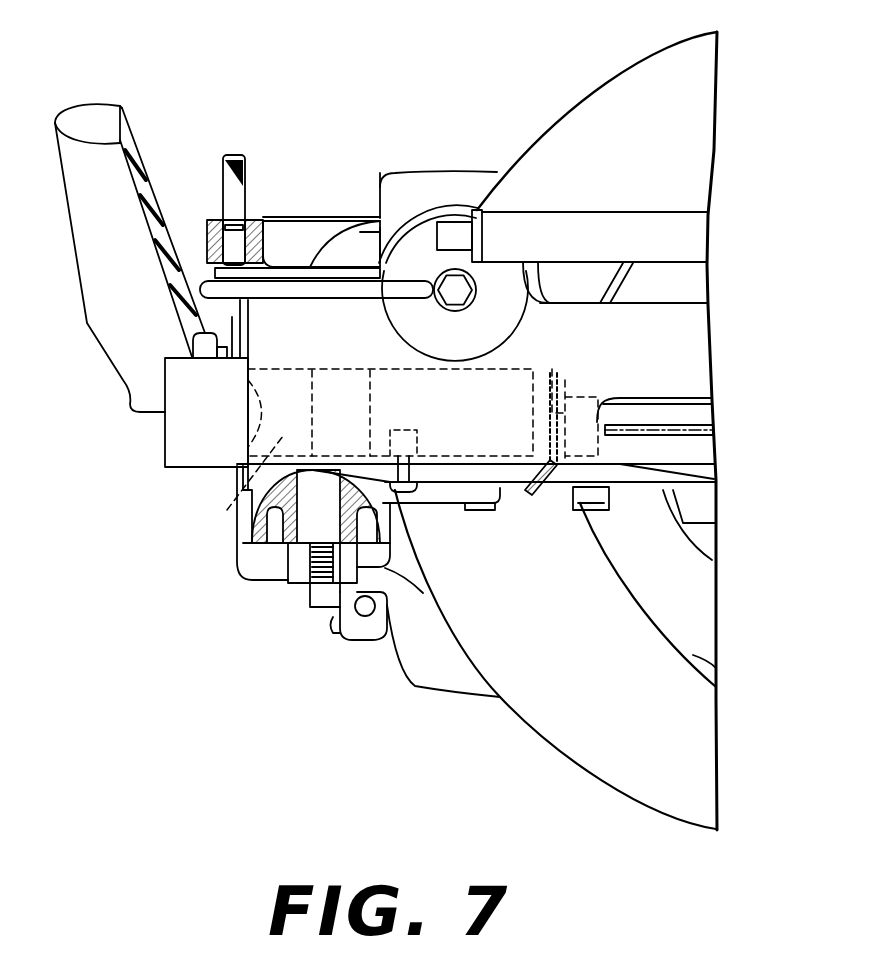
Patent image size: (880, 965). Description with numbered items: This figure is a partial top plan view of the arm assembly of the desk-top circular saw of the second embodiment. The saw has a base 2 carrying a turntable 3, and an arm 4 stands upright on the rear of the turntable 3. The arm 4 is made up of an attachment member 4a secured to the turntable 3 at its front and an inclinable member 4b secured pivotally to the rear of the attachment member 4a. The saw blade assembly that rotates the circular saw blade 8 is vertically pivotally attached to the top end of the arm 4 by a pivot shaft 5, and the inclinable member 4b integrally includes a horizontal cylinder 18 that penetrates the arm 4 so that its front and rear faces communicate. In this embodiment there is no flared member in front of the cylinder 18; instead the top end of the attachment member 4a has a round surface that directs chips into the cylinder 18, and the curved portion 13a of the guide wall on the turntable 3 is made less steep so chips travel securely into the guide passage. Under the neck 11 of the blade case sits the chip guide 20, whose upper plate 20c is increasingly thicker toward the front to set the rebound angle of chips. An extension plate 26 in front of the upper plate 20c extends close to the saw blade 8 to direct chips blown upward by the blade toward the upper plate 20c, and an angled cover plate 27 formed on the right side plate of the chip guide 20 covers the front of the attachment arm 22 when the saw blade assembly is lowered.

The base 2 is at (436, 467).
The turntable 3 is at (557, 145).
The arm 4 is at (270, 583).
The attachment member 4a is at (381, 632).
The inclinable member 4b is at (250, 565).
The pivot shaft 5 is at (313, 525).
The circular saw blade 8 is at (714, 423).
The neck 11 is at (592, 300).
The curved portion 13a is at (700, 593).
The horizontal cylinder 18 is at (170, 453).
The chip guide 20 is at (517, 370).
The upper plate 20c is at (227, 510).
The attachment arm 22 is at (500, 490).
The extension plate 26 is at (593, 400).
The angled cover plate 27 is at (537, 497).